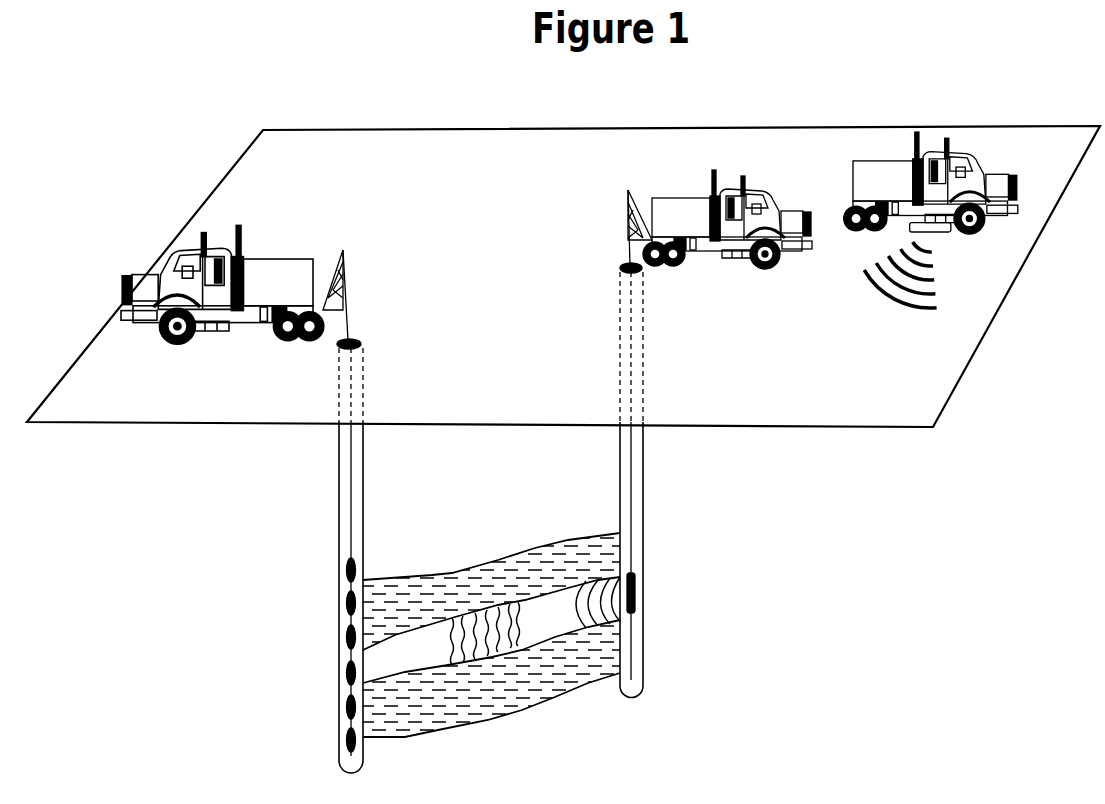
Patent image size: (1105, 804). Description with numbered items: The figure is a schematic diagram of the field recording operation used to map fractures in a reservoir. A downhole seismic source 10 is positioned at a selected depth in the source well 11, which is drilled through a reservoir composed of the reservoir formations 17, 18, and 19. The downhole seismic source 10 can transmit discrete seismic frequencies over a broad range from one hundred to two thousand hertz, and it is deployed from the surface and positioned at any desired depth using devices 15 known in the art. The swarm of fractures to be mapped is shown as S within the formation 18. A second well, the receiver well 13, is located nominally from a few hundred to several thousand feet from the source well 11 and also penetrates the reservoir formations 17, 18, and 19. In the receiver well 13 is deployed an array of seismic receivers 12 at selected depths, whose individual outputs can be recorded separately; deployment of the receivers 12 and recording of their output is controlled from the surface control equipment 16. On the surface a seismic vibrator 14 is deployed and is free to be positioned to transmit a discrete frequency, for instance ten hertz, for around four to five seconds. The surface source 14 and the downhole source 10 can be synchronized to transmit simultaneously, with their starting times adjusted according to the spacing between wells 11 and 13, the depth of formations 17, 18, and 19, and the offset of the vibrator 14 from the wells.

The downhole seismic source 10 is at (636, 593).
The source well 11 is at (624, 270).
The array of seismic receivers 12 is at (351, 641).
The receiver well 13 is at (361, 344).
The surface seismic vibrator 14 is at (931, 220).
The deployment devices 15 is at (720, 209).
The surface control equipment 16 is at (234, 278).
The reservoir formation 17 is at (492, 681).
The reservoir formation 18 is at (491, 630).
The reservoir formation 19 is at (492, 587).
The swarm of fractures S is at (536, 674).